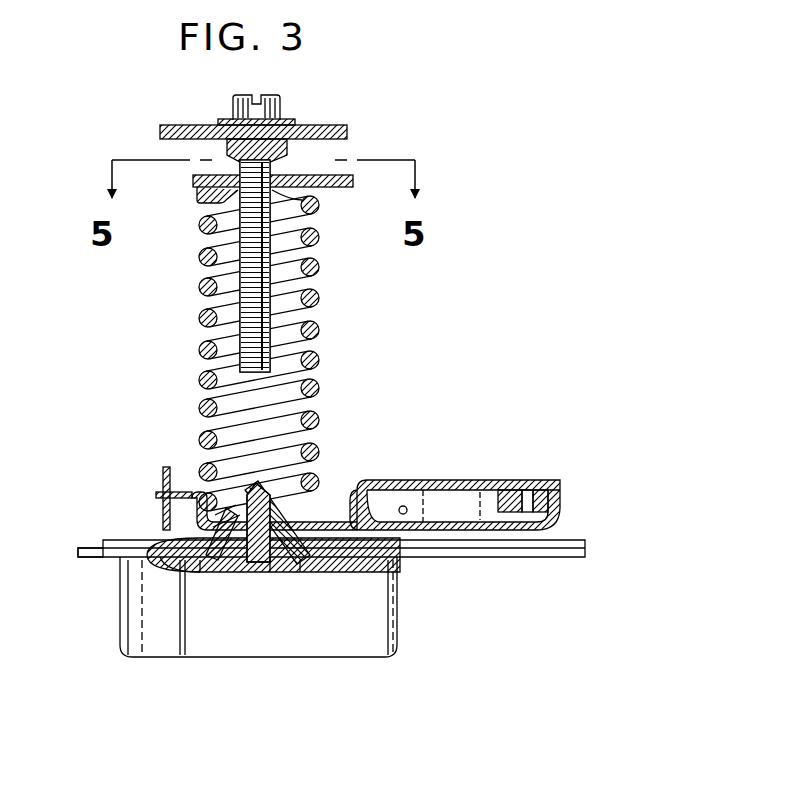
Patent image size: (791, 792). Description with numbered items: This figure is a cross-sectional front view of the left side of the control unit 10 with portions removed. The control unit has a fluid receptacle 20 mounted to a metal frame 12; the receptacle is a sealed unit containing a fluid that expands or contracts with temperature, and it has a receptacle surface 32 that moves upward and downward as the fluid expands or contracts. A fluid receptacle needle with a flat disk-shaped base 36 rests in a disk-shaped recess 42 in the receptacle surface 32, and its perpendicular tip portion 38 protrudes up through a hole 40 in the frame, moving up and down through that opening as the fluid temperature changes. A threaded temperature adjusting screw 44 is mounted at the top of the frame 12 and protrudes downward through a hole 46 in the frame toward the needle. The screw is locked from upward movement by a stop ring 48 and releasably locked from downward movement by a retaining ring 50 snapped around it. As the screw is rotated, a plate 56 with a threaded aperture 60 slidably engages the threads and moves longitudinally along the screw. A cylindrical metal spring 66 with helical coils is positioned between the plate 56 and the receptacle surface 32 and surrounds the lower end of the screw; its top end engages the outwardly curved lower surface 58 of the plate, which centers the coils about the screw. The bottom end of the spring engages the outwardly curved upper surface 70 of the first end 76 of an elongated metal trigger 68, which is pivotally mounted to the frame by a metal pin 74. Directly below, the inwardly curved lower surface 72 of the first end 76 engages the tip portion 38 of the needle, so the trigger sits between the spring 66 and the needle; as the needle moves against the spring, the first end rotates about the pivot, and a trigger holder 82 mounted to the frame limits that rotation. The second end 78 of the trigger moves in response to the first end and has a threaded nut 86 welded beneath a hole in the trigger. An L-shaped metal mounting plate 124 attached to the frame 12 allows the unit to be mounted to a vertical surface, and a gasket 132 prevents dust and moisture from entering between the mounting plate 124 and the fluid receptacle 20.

The control unit 10 is at (448, 90).
The metal frame 12 is at (175, 125).
The fluid receptacle 20 is at (253, 658).
The receptacle surface 32 is at (272, 575).
The flat disk-shaped base 36 is at (305, 572).
The tip portion 38 is at (312, 498).
The hole 40 is at (253, 575).
The disk-shaped recess 42 is at (213, 575).
The temperature adjusting screw 44 is at (280, 98).
The hole 46 is at (235, 100).
The stop ring 48 is at (290, 148).
The retaining ring 50 is at (298, 123).
The plate 56 is at (333, 190).
The lower surface 58 is at (300, 215).
The threaded aperture 60 is at (235, 228).
The spring 66 is at (320, 328).
The trigger 68 is at (460, 480).
The upper surface 70 is at (286, 494).
The lower surface 72 is at (335, 572).
The metal pin 74 is at (405, 505).
The first end 76 is at (183, 490).
The second end 78 is at (550, 483).
The trigger holder 82 is at (163, 478).
The threaded nut 86 is at (562, 503).
The L-shaped metal mounting plate 124 is at (106, 556).
The gasket 132 is at (160, 566).